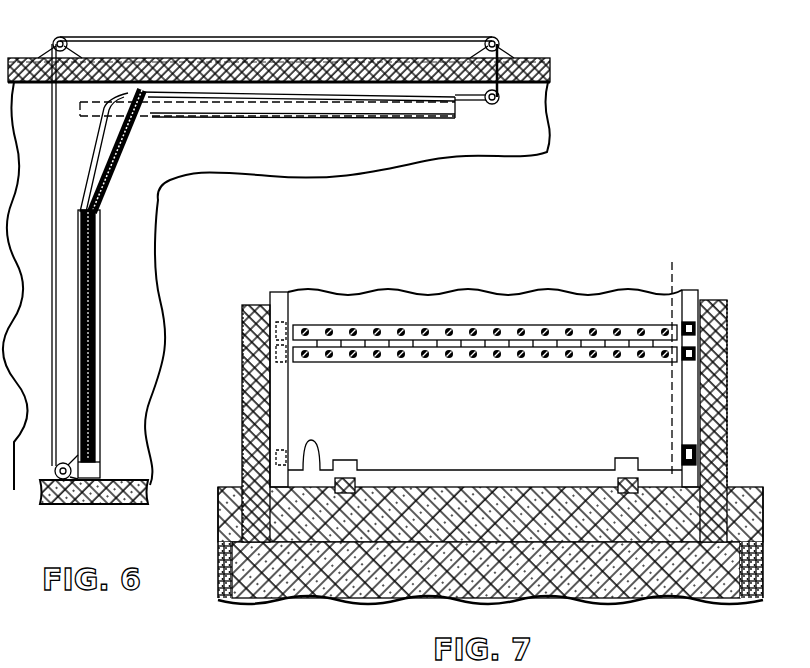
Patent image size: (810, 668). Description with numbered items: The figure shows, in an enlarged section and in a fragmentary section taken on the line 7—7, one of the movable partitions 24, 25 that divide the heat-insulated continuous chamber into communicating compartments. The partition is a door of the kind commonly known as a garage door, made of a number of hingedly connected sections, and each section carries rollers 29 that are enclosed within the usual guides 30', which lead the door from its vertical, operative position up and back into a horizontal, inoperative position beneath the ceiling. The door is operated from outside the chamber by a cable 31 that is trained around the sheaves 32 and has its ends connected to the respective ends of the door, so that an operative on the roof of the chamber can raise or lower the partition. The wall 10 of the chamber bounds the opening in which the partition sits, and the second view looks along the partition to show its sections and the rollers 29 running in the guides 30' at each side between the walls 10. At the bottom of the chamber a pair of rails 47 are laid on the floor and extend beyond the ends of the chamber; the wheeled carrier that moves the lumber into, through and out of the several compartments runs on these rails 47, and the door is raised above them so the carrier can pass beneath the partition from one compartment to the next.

In FIG. 7, the wall 10 is at (244, 433).
In FIG. 6, the movable partition 24 is at (98, 268).
In FIG. 7, the movable partition 25 is at (459, 409).
In FIG. 7, the rollers 29 is at (682, 455).
In FIG. 6, the guides 30' is at (267, 165).
In FIG. 6, the cable 31 is at (265, 38).
In FIG. 6, the sheaves 32 is at (53, 43).
In FIG. 7, the rails 47 is at (353, 488).
In FIG. 6, the section line 7- 7 is at (195, 540).